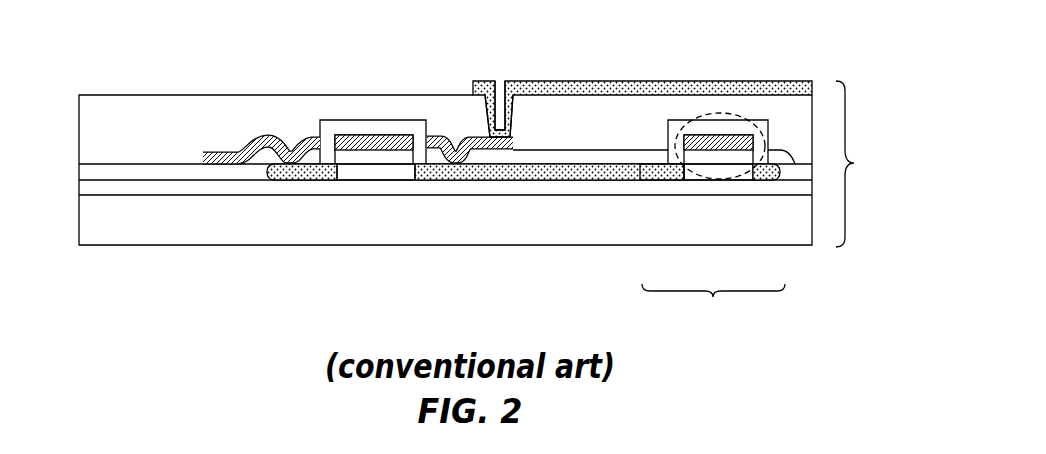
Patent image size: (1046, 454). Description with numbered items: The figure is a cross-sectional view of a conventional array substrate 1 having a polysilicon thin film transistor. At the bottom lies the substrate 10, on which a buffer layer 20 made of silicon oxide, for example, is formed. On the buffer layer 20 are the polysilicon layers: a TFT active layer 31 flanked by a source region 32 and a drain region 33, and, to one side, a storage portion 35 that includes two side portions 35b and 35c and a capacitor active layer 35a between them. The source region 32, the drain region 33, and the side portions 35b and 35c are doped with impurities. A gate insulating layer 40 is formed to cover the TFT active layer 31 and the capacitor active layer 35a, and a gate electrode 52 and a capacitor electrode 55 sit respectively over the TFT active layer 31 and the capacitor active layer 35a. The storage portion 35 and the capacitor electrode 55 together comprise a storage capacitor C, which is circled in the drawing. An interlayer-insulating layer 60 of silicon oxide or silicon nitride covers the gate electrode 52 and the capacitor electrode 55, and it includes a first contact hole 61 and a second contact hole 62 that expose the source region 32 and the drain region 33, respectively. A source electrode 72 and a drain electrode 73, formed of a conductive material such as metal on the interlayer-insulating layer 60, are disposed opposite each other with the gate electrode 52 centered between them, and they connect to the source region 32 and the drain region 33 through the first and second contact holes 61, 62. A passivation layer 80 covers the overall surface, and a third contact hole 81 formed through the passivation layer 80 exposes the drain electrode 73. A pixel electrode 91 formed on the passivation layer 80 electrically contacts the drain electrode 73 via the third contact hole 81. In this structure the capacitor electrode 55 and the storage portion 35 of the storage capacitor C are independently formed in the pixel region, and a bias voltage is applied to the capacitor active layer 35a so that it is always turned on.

The array substrate 1 is at (857, 164).
The substrate 10 is at (445, 220).
The buffer layer 20 is at (567, 187).
The TFT active layer 31 is at (355, 178).
The source region 32 is at (300, 180).
The drain region 33 is at (443, 170).
The storage portion 35 is at (713, 305).
The capacitor active layer 35a is at (723, 176).
The side portion 35b is at (670, 174).
The side portion 35c is at (773, 181).
The gate insulating layer 40 is at (343, 153).
The gate electrode 52 is at (398, 140).
The capacitor electrode 55 is at (710, 137).
The interlayer-insulating layer 60 is at (185, 166).
The first contact hole 61 is at (283, 124).
The second contact hole 62 is at (447, 114).
The source electrode 72 is at (222, 164).
The drain electrode 73 is at (492, 151).
The passivation layer 80 is at (149, 117).
The third contact hole 81 is at (499, 72).
The pixel electrode 91 is at (566, 88).
The storage capacitor C is at (760, 126).